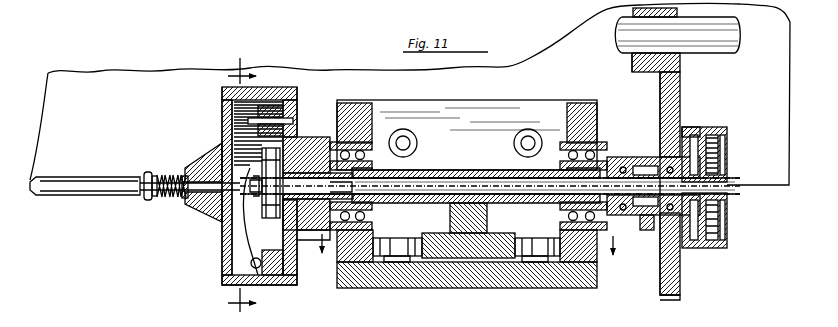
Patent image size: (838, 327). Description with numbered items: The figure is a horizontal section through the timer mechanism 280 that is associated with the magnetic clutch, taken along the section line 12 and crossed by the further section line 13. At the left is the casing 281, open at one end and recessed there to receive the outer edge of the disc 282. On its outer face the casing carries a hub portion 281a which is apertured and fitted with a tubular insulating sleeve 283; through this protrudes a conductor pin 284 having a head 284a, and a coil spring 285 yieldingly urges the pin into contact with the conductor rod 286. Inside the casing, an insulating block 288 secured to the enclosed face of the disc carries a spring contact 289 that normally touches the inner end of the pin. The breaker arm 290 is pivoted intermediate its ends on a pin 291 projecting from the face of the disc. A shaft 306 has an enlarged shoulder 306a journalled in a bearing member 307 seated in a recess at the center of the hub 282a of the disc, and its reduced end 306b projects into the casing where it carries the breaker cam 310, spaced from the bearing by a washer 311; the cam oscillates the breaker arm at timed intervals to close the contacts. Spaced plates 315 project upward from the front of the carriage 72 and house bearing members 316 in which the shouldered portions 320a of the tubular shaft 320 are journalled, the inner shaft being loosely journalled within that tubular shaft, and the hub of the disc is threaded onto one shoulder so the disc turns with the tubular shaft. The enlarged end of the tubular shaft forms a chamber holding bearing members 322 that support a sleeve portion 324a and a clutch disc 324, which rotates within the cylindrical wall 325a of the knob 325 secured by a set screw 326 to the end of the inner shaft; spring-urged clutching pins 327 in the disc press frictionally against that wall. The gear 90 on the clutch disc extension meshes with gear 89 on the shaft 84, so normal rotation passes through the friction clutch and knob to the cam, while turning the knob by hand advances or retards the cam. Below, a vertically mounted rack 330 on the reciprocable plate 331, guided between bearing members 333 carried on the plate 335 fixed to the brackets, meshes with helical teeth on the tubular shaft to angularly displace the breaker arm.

The carriage 72 is at (114, 81).
The section line 12 is at (242, 190).
The section line 13 is at (467, 244).
The shaft 84 is at (735, 33).
The gear 89 is at (681, 67).
The gear 90 is at (669, 296).
The timer mechanism 280 is at (292, 84).
The casing 281 is at (228, 247).
The hub portion 281a is at (193, 170).
The disc 282 is at (297, 106).
The hub 282a is at (338, 108).
The tubular insulating sleeve 283 is at (188, 199).
The conductor pin 284 is at (182, 205).
The head 284a is at (148, 171).
The coil spring 285 is at (160, 196).
The conductor rod 286 is at (57, 180).
The insulating block 288 is at (266, 277).
The spring contact 289 is at (250, 228).
The breaker arm 290 is at (250, 127).
The pin 291 is at (290, 112).
The shaft 306 is at (430, 184).
The enlarged shoulder 306a is at (417, 152).
The reduced end 306b is at (283, 238).
The bearing member 307 is at (296, 152).
The breaker cam 310 is at (270, 219).
The washer 311 is at (264, 146).
The spaced plates 315 is at (578, 110).
The bearing members 316 is at (376, 162).
The tubular shaft 320 is at (492, 172).
The shouldered portions 320a is at (381, 198).
The bearing members 322 is at (641, 214).
The clutch disc 324 is at (724, 190).
The sleeve portion 324a is at (648, 230).
The knob 325 is at (728, 214).
The cylindrical wall 325a is at (689, 128).
The set screw 326 is at (724, 172).
The clutching pins 327 is at (700, 242).
The rack 330 is at (488, 211).
The plate 331 is at (490, 250).
The bearing members 333 is at (405, 246).
The plate 335 is at (440, 289).